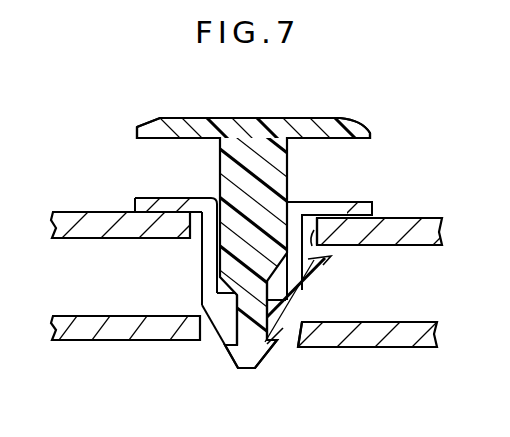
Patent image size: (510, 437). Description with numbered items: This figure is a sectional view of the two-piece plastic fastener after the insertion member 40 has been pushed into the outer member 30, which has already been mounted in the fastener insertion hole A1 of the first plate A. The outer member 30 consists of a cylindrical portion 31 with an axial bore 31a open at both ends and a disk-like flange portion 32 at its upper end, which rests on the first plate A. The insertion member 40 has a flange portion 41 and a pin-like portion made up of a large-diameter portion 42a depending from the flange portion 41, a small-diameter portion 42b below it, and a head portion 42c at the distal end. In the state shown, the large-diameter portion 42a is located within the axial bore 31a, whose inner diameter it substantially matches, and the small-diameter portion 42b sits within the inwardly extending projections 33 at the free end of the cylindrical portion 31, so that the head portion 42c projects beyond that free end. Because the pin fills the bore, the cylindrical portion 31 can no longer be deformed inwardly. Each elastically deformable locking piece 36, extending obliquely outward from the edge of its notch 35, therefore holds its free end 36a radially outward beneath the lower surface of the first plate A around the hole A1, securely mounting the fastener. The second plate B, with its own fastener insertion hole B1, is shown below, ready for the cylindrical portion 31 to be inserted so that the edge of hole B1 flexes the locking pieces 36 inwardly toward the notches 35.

The outer member 30 is at (202, 192).
The cylindrical portion 31 is at (205, 250).
The axial bore 31a is at (213, 291).
The flange portion 32 is at (190, 199).
The inwardly extending projections 33 is at (216, 330).
The notch 35 is at (308, 180).
The locking piece 36 is at (300, 292).
The free end of locking piece 36a is at (326, 260).
The insertion member 40 is at (307, 98).
The flange portion 41 is at (348, 119).
The large-diameter portion 42a is at (286, 164).
The small-diameter portion 42b is at (226, 340).
The head portion 42c is at (259, 370).
The first plate A is at (412, 213).
The fastener insertion hole A1 is at (317, 270).
The second plate B is at (397, 344).
The fastener insertion hole B1 is at (297, 342).